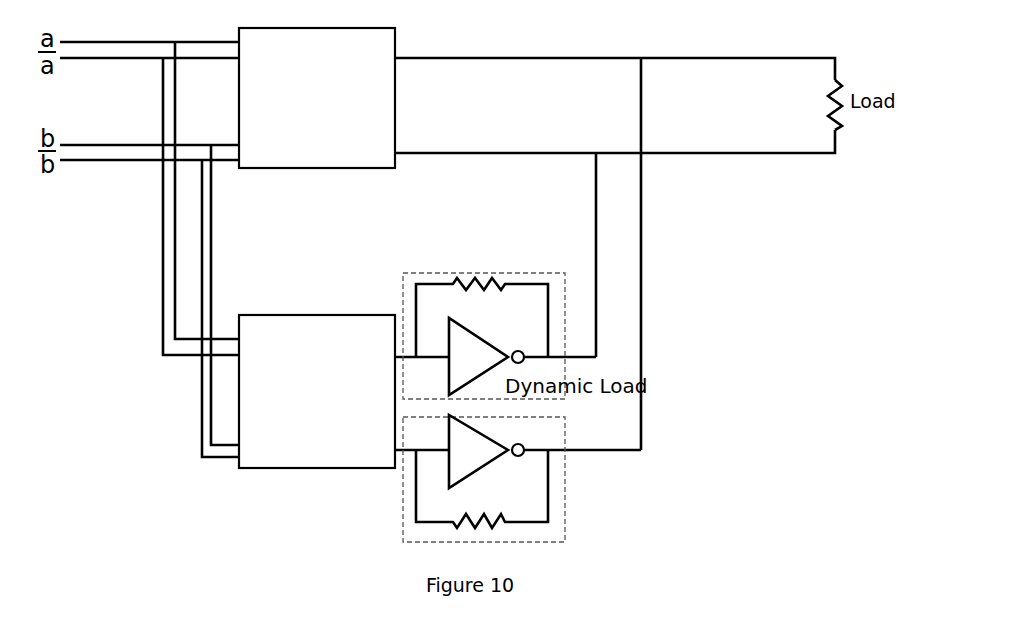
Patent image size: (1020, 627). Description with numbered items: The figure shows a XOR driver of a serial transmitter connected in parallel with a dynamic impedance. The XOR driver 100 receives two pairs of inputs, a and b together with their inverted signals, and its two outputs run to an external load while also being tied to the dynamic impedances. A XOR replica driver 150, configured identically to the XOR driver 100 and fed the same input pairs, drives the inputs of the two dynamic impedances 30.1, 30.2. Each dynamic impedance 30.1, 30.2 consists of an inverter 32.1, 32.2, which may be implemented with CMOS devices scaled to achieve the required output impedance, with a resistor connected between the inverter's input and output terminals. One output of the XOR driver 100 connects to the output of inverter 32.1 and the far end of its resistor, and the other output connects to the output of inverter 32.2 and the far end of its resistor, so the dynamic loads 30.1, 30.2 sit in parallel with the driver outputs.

The XOR driver 100 is at (317, 98).
The XOR replica driver 150 is at (317, 391).
The dynamic impedance 30.1 is at (482, 317).
The inverter 32.1 is at (486, 356).
The dynamic impedance 30.2 is at (482, 489).
The inverter 32.2 is at (486, 451).